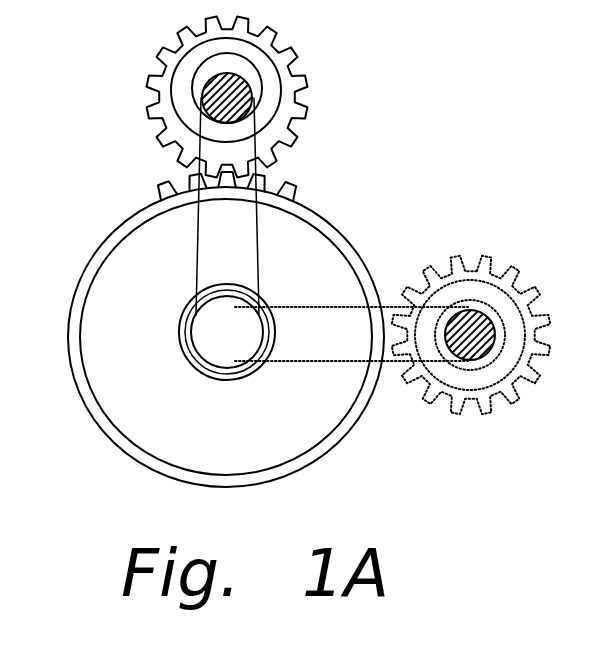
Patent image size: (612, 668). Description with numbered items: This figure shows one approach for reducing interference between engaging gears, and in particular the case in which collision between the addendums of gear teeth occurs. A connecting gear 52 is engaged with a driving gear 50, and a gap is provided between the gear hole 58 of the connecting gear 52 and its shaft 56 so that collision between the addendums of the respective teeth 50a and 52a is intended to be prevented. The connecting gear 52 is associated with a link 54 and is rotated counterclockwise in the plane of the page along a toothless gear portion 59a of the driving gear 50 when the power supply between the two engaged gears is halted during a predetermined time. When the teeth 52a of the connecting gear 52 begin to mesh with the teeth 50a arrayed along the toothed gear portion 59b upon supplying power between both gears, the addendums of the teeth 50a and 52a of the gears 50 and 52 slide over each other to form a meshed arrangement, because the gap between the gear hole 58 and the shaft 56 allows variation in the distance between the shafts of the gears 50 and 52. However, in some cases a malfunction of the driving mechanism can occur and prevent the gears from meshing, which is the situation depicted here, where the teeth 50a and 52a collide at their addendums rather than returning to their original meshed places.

The driving gear 50 is at (223, 292).
The teeth of driving gear 50a is at (290, 182).
The connecting gear 52 is at (243, 88).
The teeth of connecting gear 52a is at (273, 137).
The link 54 is at (217, 212).
The shaft 56 is at (238, 94).
The gear hole 58 is at (240, 67).
The toothless gear portion 59a is at (339, 441).
The toothed gear portion 59b is at (293, 218).